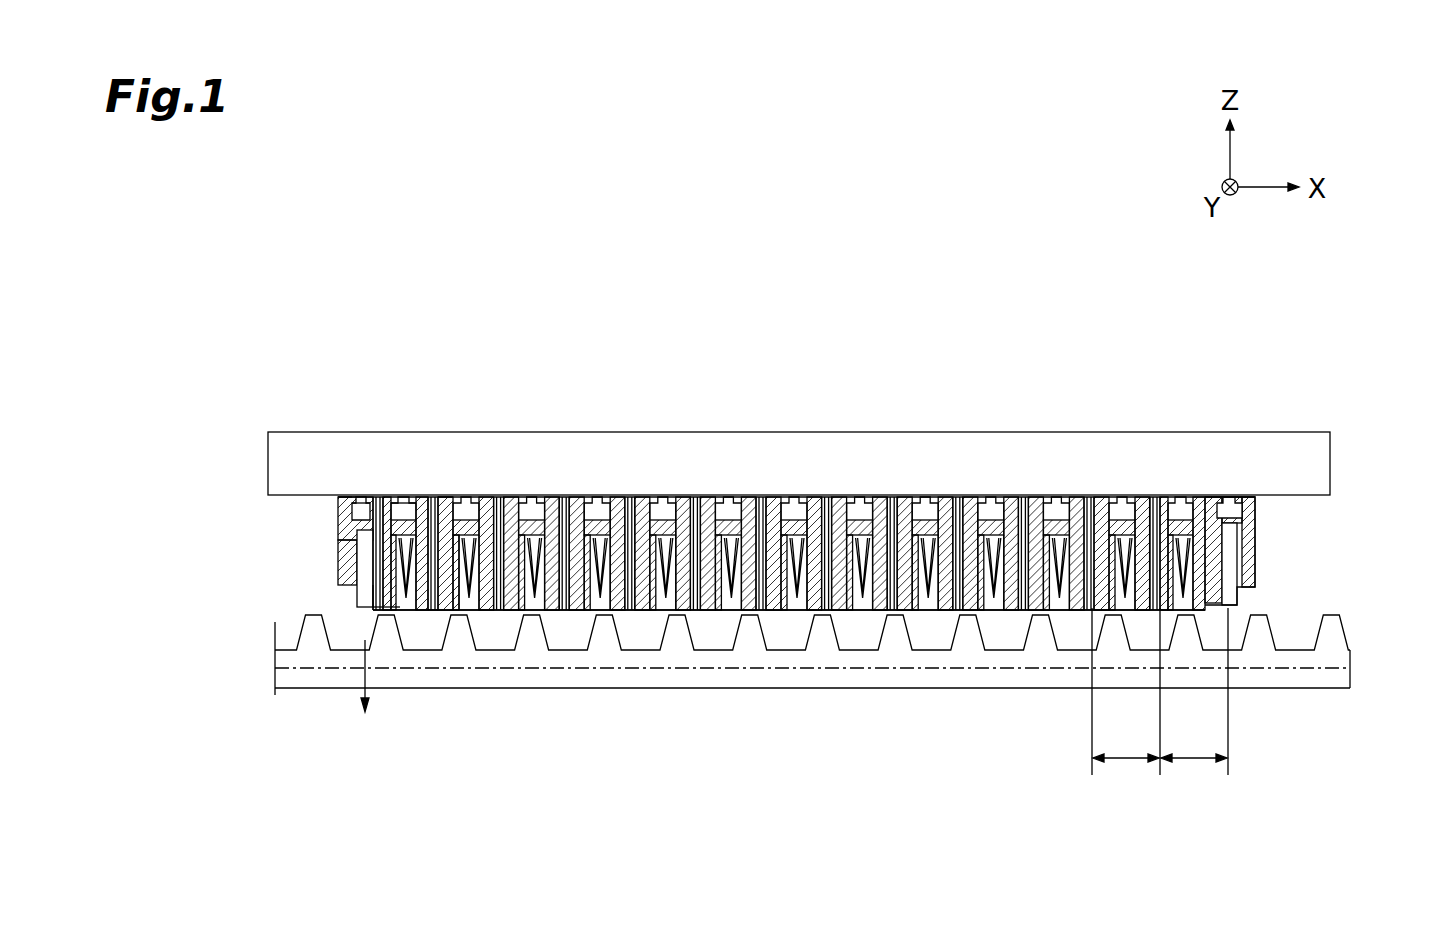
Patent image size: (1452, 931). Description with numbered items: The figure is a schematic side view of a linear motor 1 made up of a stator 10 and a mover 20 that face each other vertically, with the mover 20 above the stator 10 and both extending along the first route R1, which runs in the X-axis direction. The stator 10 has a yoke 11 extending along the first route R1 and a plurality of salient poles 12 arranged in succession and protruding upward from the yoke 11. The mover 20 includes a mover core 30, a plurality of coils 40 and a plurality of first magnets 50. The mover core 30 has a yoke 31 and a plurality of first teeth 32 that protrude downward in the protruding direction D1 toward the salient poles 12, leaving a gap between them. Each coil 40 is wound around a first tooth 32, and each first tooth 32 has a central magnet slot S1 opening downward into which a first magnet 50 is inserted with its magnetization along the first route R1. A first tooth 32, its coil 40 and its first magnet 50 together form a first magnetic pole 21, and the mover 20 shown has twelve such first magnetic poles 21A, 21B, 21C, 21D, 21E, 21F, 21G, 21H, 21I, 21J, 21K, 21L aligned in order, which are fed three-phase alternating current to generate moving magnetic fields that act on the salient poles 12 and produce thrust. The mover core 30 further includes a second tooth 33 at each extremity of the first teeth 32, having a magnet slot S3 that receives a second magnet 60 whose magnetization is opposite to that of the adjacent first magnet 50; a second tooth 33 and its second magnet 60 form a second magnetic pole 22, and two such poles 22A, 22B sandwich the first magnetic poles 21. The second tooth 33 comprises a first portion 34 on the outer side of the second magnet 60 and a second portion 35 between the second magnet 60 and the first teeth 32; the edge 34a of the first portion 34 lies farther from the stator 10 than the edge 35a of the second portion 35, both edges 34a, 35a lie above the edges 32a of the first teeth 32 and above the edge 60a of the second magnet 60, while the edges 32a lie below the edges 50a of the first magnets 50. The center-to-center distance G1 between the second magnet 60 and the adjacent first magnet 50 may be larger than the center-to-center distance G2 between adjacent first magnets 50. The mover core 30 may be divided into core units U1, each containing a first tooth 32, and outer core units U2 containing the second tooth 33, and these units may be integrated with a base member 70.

The linear motor 1 is at (831, 356).
The stator 10 is at (863, 707).
The yoke 11 is at (1022, 678).
The salient poles 12 is at (987, 634).
The mover 20 is at (773, 547).
The first magnetic poles 21 is at (560, 563).
The first magnetic pole 21A is at (1155, 480).
The first magnetic pole 21B is at (1089, 480).
The first magnetic pole 21C is at (1023, 480).
The first magnetic pole 21D is at (958, 480).
The first magnetic pole 21E is at (892, 480).
The first magnetic pole 21F is at (827, 480).
The first magnetic pole 21G is at (761, 480).
The first magnetic pole 21H is at (695, 480).
The first magnetic pole 21I is at (630, 480).
The first magnetic pole 21J is at (564, 480).
The first magnetic pole 21K is at (499, 480).
The first magnetic pole 21L is at (563, 563).
The second magnetic pole 22 is at (692, 547).
The second magnetic pole 22A is at (1209, 480).
The second magnetic pole 22B is at (378, 480).
The mover core 30 is at (276, 548).
The yoke 31 is at (466, 500).
The first teeth 32 is at (429, 612).
The edges of the first teeth 32a is at (597, 612).
The second tooth 33 is at (276, 541).
The first portion 34 is at (340, 532).
The second portion 35 is at (345, 560).
The edge of the first portion 34a is at (350, 585).
The edge of the second portion 35a is at (380, 612).
The coils 40 is at (403, 612).
The first magnets 50 is at (455, 612).
The edges of the first magnets 50a is at (515, 612).
The second magnet 60 is at (378, 600).
The edge of the second magnet 60a is at (380, 610).
The base member 70 is at (1320, 468).
The protruding direction D1 is at (360, 688).
The center-to-center distance G1 is at (1194, 703).
The center-to-center distance G2 is at (1126, 703).
The first route R1 is at (803, 668).
The magnet slot S1 is at (402, 497).
The magnet slot S3 is at (366, 497).
The core units U1 is at (440, 497).
The core unit U2 is at (345, 497).